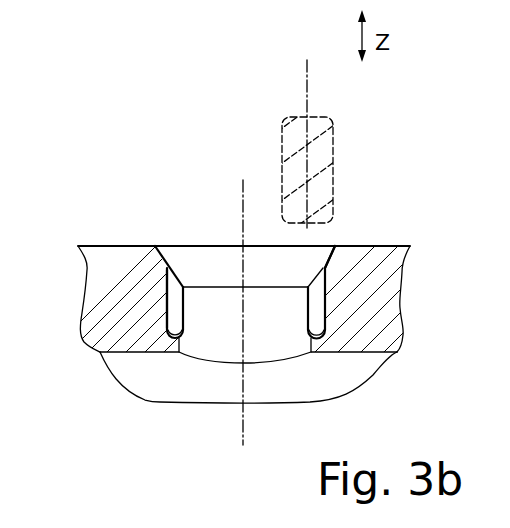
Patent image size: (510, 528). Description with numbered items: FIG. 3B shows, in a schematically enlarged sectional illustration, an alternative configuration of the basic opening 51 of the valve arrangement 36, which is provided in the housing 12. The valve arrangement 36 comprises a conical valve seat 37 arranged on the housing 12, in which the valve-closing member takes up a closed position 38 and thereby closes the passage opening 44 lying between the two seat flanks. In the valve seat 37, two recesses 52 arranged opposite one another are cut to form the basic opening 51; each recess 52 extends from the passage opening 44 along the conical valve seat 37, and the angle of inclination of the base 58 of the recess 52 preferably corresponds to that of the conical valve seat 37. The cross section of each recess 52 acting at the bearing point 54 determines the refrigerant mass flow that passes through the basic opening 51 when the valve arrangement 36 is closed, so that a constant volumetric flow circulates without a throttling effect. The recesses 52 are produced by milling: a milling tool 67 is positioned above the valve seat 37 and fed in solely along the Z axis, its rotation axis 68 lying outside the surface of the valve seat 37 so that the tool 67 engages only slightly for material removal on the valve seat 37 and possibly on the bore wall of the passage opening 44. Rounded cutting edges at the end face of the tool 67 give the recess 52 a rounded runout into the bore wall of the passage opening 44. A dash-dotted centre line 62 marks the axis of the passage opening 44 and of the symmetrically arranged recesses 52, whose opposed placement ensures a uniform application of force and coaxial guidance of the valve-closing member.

The housing 12 is at (377, 328).
The valve arrangement 36 is at (160, 175).
The valve seat 37 is at (157, 258).
The closed position 38 is at (146, 286).
The passage opening 44 is at (199, 347).
The basic opening 51 is at (186, 248).
The recess 52 is at (182, 307).
The bearing point 54 is at (103, 350).
The base of the recess 58 is at (320, 281).
The groove centre axis 62 is at (243, 197).
The milling tool 67 is at (333, 147).
The rotation axis 68 is at (305, 77).